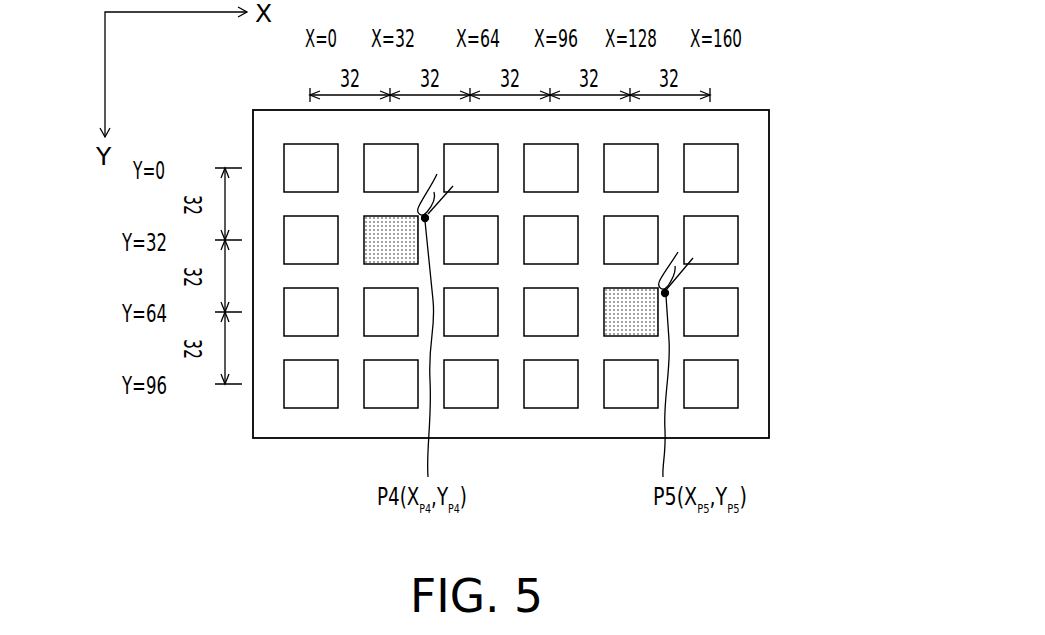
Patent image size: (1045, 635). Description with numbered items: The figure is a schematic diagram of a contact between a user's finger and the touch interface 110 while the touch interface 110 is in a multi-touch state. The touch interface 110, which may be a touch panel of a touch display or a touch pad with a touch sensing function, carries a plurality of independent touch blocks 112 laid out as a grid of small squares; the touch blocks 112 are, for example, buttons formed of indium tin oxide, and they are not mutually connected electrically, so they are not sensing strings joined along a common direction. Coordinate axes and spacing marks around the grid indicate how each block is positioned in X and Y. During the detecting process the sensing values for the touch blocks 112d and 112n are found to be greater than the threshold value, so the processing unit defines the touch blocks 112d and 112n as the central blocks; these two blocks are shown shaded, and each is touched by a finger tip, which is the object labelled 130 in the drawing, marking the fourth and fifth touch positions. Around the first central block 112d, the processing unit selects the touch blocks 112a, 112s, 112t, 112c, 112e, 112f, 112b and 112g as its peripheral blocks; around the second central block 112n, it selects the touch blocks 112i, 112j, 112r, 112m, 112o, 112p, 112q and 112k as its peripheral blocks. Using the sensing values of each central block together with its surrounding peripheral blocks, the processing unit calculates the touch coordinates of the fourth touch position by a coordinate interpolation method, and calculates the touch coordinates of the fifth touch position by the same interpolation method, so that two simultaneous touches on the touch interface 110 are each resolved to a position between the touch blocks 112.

The touch interface 110 is at (511, 440).
The touch blocks 112 is at (511, 319).
The touch block 112a is at (330, 180).
The touch block 112b is at (490, 252).
The touch block 112c is at (410, 180).
The central block 112d is at (410, 252).
The touch block 112e is at (410, 324).
The touch block 112f is at (490, 180).
The touch block 112g is at (490, 324).
The touch block 112i is at (566, 252).
The touch block 112j is at (566, 324).
The touch block 112k is at (730, 396).
The touch block 112m is at (652, 252).
The central block 112n is at (650, 324).
The touch block 112o is at (650, 396).
The touch block 112p is at (730, 252).
The touch block 112q is at (730, 324).
The touch block 112r is at (568, 396).
The touch block 112s is at (330, 252).
The touch block 112t is at (328, 324).
The stylus / touch object 130 is at (441, 172).